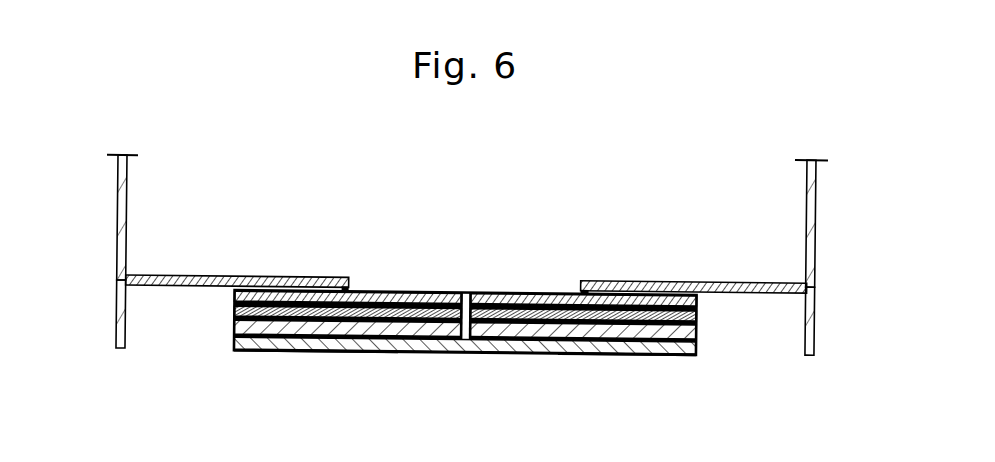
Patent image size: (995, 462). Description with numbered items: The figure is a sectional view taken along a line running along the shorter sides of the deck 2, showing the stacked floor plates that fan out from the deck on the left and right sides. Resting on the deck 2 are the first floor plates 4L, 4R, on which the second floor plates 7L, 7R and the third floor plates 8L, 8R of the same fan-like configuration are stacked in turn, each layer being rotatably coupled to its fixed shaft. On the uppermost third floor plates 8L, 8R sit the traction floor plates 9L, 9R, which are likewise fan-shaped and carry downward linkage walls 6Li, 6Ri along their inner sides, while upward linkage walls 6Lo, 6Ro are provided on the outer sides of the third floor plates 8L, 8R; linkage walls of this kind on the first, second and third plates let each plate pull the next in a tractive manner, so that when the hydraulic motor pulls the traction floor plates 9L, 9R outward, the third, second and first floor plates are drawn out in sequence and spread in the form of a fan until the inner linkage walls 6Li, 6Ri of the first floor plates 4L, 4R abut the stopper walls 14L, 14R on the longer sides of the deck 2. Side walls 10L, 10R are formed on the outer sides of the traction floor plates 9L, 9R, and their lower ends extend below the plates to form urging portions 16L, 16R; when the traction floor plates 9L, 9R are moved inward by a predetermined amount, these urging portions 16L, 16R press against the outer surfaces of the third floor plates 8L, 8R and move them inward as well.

The deck 2 is at (450, 364).
The first floor plate 4L is at (266, 386).
The first floor plate 4R is at (662, 388).
The downward linkage wall 6Li is at (347, 345).
The upward linkage wall 6Lo is at (313, 321).
The downward linkage wall 6Ri is at (583, 346).
The upward linkage wall 6Ro is at (621, 325).
The second floor plate 7L is at (345, 385).
The second floor plate 7R is at (599, 386).
The third floor plate 8L is at (348, 265).
The third floor plate 8R is at (583, 261).
The traction floor plate 9L is at (237, 255).
The traction floor plate 9R is at (694, 260).
The side wall 10L is at (95, 217).
The side wall 10R is at (841, 221).
The stopper wall 14L is at (313, 358).
The stopper wall 14R is at (622, 361).
The urging portion 16L is at (88, 314).
The urging portion 16R is at (844, 321).